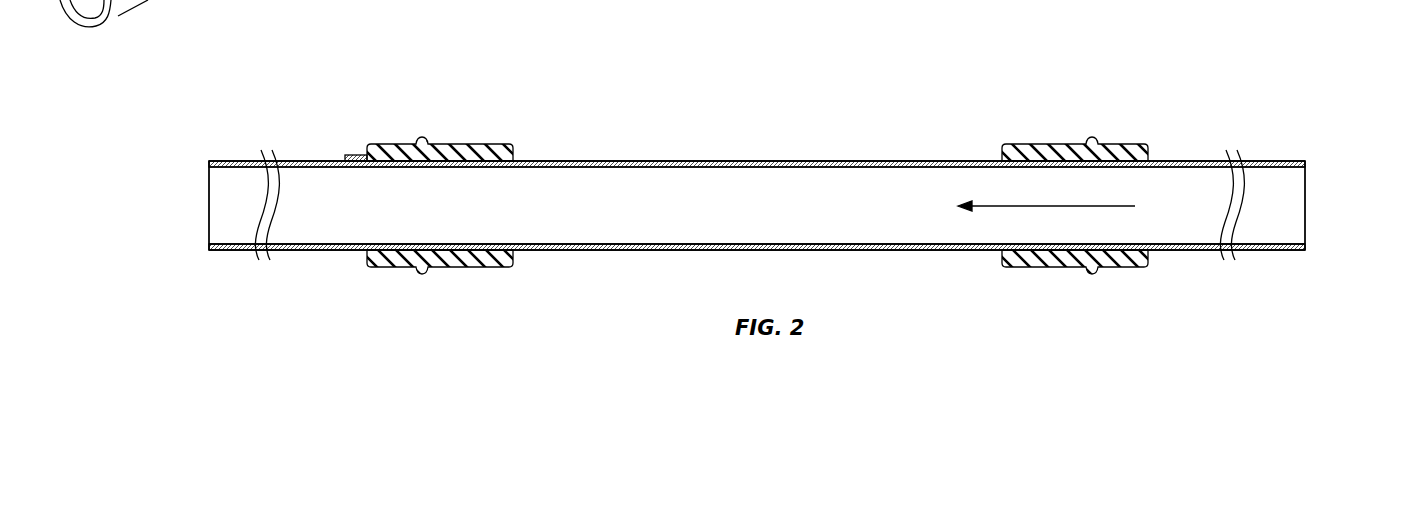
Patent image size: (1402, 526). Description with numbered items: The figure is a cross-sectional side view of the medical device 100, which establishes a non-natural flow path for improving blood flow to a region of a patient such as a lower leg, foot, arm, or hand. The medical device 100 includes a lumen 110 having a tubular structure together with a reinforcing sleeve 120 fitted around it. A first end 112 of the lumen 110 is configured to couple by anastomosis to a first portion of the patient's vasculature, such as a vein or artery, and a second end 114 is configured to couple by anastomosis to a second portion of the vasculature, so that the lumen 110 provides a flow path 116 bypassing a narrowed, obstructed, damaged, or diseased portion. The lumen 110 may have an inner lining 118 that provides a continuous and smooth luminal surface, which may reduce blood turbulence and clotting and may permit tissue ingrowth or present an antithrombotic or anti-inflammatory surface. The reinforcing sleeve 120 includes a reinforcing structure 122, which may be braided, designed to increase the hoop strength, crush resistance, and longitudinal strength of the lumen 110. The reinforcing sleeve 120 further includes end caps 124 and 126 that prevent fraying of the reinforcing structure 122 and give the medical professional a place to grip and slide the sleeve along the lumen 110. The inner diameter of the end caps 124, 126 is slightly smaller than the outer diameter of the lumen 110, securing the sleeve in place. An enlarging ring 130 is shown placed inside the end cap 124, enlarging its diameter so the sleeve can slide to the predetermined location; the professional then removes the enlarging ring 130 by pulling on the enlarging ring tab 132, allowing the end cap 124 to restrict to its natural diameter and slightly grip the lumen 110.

The medical device 100 is at (916, 99).
The lumen 110 is at (290, 158).
The first end 112 is at (1305, 198).
The second end 114 is at (122, 20).
The flow path 116 is at (1017, 202).
The inner lining 118 is at (1185, 241).
The reinforcing sleeve 120 is at (777, 157).
The reinforcing structure 122 is at (884, 252).
The end cap 124 is at (374, 143).
The end cap 126 is at (1133, 143).
The enlarging ring 130 is at (365, 249).
The enlarging ring tab 132 is at (347, 153).